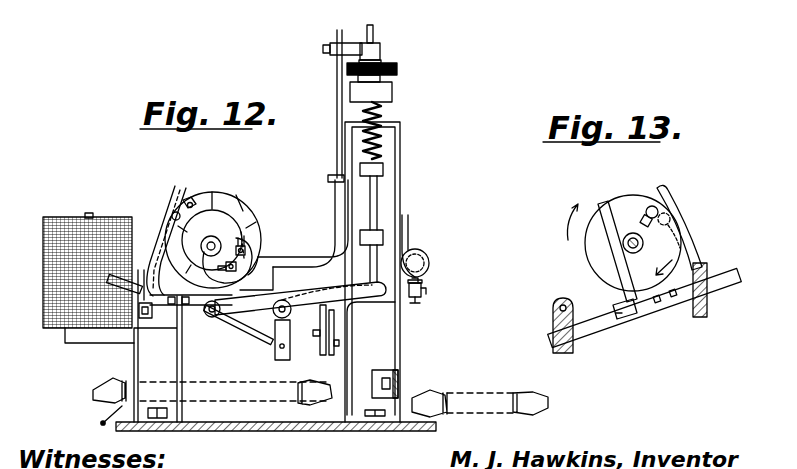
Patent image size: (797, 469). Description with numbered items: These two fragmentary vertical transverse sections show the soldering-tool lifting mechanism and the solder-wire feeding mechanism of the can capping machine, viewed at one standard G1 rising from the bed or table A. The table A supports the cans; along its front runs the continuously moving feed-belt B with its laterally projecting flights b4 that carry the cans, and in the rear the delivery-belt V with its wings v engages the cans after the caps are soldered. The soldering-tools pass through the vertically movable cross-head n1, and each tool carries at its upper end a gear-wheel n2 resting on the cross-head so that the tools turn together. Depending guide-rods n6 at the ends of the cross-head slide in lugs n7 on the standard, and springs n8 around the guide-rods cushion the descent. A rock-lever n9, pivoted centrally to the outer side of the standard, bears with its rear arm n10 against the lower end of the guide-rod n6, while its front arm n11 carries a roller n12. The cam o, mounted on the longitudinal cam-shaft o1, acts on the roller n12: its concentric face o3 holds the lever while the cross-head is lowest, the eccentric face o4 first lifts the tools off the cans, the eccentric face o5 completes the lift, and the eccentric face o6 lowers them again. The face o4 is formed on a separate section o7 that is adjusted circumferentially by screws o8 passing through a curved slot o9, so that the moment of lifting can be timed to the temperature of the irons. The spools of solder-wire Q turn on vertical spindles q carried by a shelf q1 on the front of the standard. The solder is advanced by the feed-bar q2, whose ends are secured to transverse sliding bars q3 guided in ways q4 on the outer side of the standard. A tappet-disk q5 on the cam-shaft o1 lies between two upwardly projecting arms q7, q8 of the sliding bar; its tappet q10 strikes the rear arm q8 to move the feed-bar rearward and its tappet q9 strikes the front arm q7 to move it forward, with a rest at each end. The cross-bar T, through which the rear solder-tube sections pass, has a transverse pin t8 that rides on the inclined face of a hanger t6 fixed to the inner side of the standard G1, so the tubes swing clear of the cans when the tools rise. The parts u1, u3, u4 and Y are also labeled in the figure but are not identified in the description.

In FIG. 12, the bed or table A is at (244, 431).
In FIG. 12, the reels or spools of solder-wire Q is at (74, 272).
In FIG. 12, the vertical spindles q is at (86, 214).
In FIG. 12, the shelf q1 is at (68, 341).
In FIG. 12, the feed-bar q2 is at (189, 200).
In FIG. 13, the feed-bar q2 is at (641, 223).
In FIG. 12, the transverse sliding bars q3 is at (108, 275).
In FIG. 13, the transverse sliding bars q3 is at (741, 276).
In FIG. 12, the ways q4 is at (146, 318).
In FIG. 13, the ways q4 is at (707, 300).
In FIG. 12, the tappet-disk q5 is at (212, 192).
In FIG. 13, the tappet-disk q5 is at (585, 258).
In FIG. 12, the front arm of sliding bar q7 is at (177, 203).
In FIG. 13, the front arm of sliding bar q7 is at (688, 233).
In FIG. 13, the rear arm of sliding bar q8 is at (605, 214).
In FIG. 12, the tappet q9 is at (180, 221).
In FIG. 13, the tappet q9 is at (671, 212).
In FIG. 13, the tappet q10 is at (650, 206).
In FIG. 12, the cam o is at (190, 245).
In FIG. 12, the cam-shaft o1 is at (212, 238).
In FIG. 13, the cam-shaft o1 is at (636, 251).
In FIG. 12, the concentric face o3 is at (262, 215).
In FIG. 12, the eccentric face o4 is at (250, 257).
In FIG. 12, the eccentric face o5 is at (192, 266).
In FIG. 12, the eccentric face o6 is at (170, 243).
In FIG. 12, the cam section o7 is at (247, 238).
In FIG. 12, the screws o8 is at (250, 248).
In FIG. 12, the curved slot o9 is at (256, 262).
In FIG. 12, the cross-head n1 is at (392, 90).
In FIG. 12, the gear-wheel n2 is at (398, 68).
In FIG. 12, the guide-rods n6 is at (378, 203).
In FIG. 12, the lugs n7 is at (383, 169).
In FIG. 12, the springs n8 is at (383, 124).
In FIG. 12, the rock-lever n9 is at (284, 300).
In FIG. 12, the rear arm of rock-lever n10 is at (334, 296).
In FIG. 12, the front arm of rock-lever n11 is at (252, 324).
In FIG. 12, the roller n12 is at (210, 318).
In FIG. 12, the handle u1 is at (349, 50).
In FIG. 12, the pipe u3 is at (337, 119).
In FIG. 12, the bracket u4 is at (335, 176).
In FIG. 12, the delivery-belt V is at (374, 35).
In FIG. 12, the hanger t6 is at (334, 318).
In FIG. 12, the transverse pin t8 is at (334, 331).
In FIG. 12, the cross-bar T is at (339, 344).
In FIG. 12, the standard G1 is at (398, 350).
In FIG. 12, the wings or flights b4 is at (93, 392).
In FIG. 12, the feed-belt B is at (111, 414).
In FIG. 12, the coupling Y is at (513, 403).
In FIG. 12, the wings v is at (528, 393).